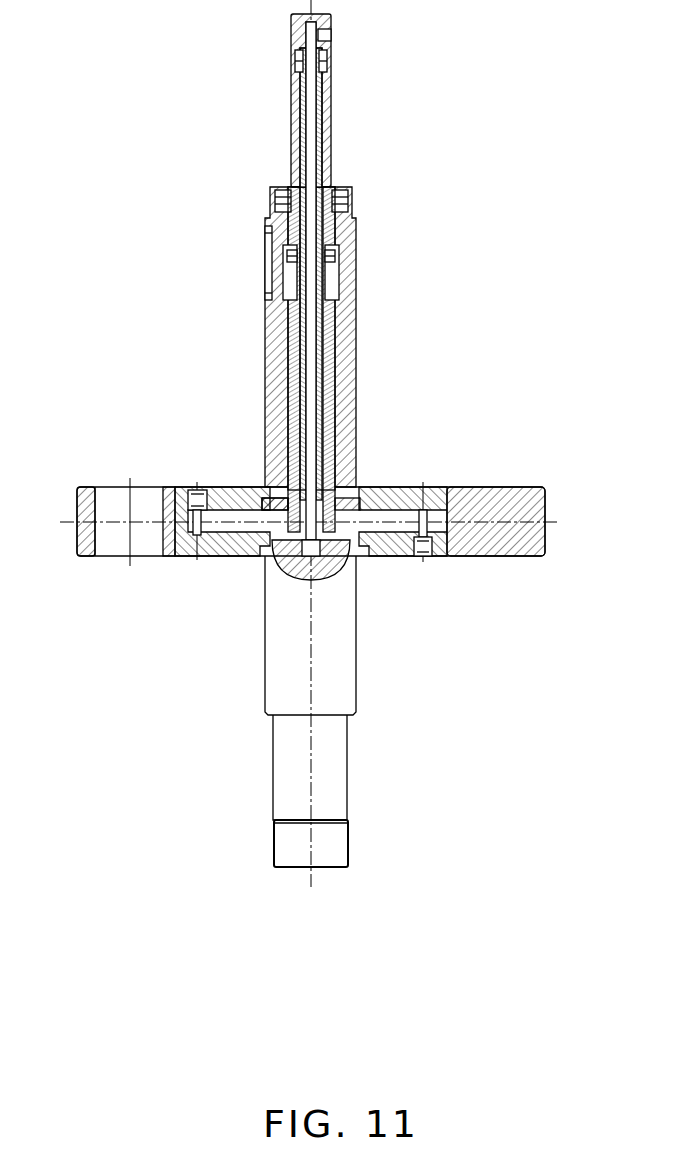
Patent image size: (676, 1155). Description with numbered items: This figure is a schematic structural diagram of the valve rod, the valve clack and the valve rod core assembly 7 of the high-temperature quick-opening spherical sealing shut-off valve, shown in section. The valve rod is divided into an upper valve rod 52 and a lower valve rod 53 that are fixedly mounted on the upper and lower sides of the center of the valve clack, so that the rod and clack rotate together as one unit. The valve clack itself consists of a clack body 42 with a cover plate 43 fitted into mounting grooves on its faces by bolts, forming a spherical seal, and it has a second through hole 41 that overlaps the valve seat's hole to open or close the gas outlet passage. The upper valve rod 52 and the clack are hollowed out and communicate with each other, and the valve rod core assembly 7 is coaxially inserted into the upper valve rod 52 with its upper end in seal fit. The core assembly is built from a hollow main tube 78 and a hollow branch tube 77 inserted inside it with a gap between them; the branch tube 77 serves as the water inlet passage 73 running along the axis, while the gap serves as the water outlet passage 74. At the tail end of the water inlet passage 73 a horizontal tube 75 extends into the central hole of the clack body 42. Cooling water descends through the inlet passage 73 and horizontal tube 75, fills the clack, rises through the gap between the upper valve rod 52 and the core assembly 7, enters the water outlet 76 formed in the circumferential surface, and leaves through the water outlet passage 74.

The valve rod core assembly 7 is at (290, 340).
The second through hole 41 is at (139, 533).
The clack body 42 is at (175, 490).
The cover plate 43 is at (233, 488).
The upper valve rod 52 is at (347, 393).
The lower valve rod 53 is at (330, 748).
The water inlet passage 73 is at (297, 55).
The water outlet passage 74 is at (318, 118).
The horizontal tube 75 is at (357, 505).
The water outlet 76 is at (328, 301).
The hollow branch tube 77 is at (297, 93).
The hollow main tube 78 is at (293, 150).